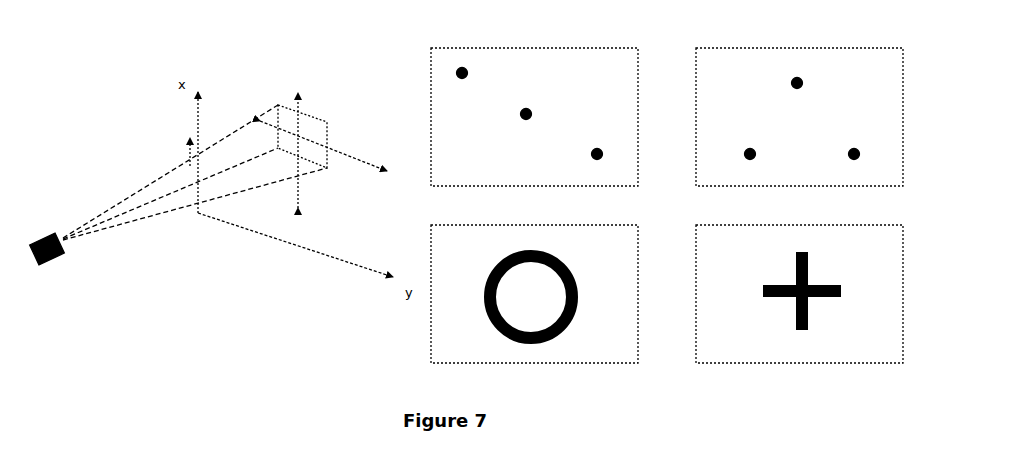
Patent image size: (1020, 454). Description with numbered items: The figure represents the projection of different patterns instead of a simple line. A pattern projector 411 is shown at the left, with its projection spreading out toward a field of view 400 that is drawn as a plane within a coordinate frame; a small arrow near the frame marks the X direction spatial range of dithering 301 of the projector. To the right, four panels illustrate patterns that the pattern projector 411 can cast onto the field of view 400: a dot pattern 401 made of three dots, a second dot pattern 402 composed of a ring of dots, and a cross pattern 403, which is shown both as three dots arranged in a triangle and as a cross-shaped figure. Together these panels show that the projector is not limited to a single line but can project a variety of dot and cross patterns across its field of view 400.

The X direction spatial range of dithering 301 is at (186, 153).
The field of view 400 is at (323, 150).
The dot pattern 401 is at (556, 122).
The dot pattern 402 is at (556, 299).
The cross pattern 403 is at (821, 210).
The pattern projector 411 is at (69, 258).